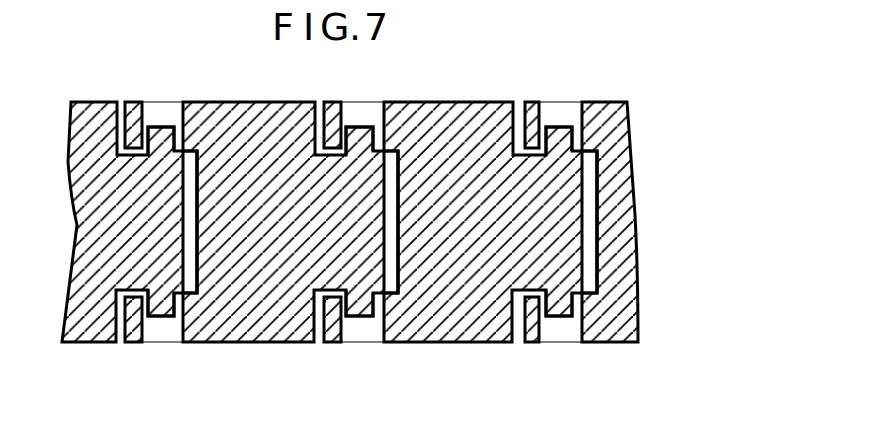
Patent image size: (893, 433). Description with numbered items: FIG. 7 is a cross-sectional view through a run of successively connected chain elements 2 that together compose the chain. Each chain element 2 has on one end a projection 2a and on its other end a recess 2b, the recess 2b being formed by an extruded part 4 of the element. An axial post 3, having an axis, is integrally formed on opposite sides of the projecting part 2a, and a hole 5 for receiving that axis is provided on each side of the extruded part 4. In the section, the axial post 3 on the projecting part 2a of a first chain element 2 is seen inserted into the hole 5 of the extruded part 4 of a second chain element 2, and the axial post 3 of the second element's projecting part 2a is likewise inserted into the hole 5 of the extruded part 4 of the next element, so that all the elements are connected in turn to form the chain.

The chain element 2 is at (262, 127).
The projection 2a is at (180, 252).
The recess 2b is at (211, 178).
The axial post 3 is at (158, 127).
The extruded part 4 is at (132, 103).
The hole 5 is at (173, 112).